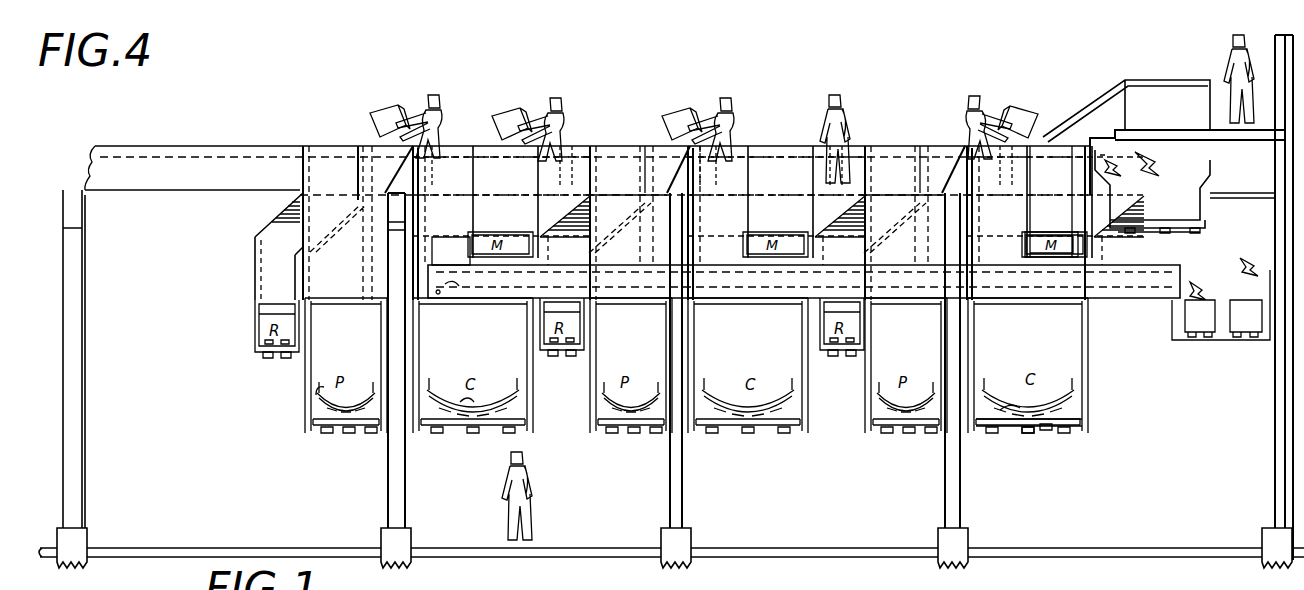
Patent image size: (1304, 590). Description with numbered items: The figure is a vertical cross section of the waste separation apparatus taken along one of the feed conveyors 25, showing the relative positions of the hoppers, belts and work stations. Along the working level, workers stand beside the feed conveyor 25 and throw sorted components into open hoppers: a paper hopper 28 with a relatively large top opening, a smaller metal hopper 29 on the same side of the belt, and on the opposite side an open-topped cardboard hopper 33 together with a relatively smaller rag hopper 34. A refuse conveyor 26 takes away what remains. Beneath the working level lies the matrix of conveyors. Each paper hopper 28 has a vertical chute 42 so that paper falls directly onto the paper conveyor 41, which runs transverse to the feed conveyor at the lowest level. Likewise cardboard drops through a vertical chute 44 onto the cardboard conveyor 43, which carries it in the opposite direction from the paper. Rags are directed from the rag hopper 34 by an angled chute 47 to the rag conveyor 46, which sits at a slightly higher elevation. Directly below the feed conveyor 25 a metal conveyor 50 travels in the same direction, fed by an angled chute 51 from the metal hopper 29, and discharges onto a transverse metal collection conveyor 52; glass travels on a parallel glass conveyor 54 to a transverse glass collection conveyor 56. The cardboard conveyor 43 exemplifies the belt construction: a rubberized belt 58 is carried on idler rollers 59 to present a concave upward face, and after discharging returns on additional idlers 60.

The feed conveyor 25 is at (169, 156).
The refuse conveyor 26 is at (1186, 208).
The receiving hopper (paper hopper) 28 is at (385, 190).
The metal hopper 29 is at (769, 146).
The cardboard hopper 33 is at (440, 154).
The rag hopper 34 is at (606, 148).
The paper conveyor 41 is at (328, 410).
The vertical chute 42 is at (304, 368).
The cardboard conveyor 43 is at (465, 402).
The vertical chute 44 is at (539, 372).
The rag conveyor 46 is at (262, 332).
The angled chute 47 is at (255, 282).
The metal conveyor 50 is at (472, 298).
The angled chute 51 is at (468, 230).
The metal collection conveyor 52 is at (1201, 342).
The glass conveyor 54 is at (430, 246).
The glass collection conveyor 56 is at (1252, 342).
The rubberized belt 58 is at (1014, 406).
The idler rollers 59 is at (1080, 416).
The additional idlers 60 is at (1028, 436).